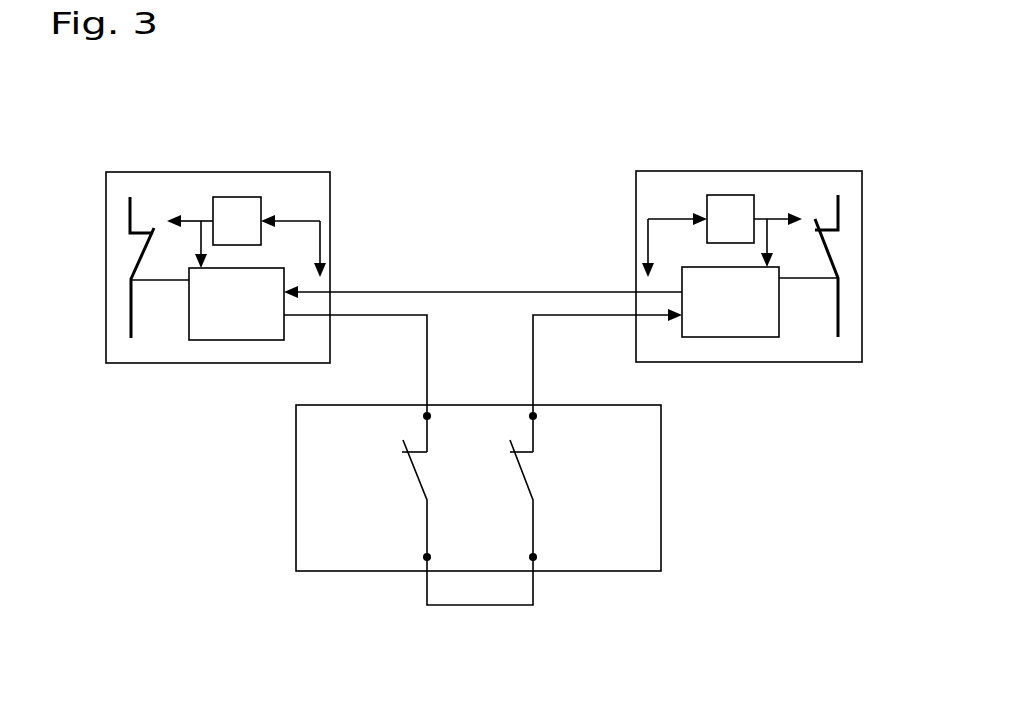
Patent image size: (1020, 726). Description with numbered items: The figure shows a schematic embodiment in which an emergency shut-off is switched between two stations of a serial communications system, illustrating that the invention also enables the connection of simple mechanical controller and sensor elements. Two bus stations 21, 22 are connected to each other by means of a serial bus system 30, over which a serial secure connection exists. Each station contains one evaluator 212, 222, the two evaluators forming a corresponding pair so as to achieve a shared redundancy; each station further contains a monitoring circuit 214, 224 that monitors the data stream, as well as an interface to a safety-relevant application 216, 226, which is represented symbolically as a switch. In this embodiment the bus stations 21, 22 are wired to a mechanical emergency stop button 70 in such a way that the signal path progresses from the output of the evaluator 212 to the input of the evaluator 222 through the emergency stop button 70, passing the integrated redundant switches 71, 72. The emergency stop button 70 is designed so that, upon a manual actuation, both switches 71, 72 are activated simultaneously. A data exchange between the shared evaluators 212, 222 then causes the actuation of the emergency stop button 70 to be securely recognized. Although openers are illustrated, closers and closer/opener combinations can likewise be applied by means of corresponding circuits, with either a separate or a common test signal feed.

The station 21 is at (142, 364).
The evaluator 212 is at (225, 340).
The monitoring circuit 214 is at (236, 197).
The interface to a safety-relevant application 216 is at (131, 272).
The station 22 is at (815, 363).
The evaluator 222 is at (729, 338).
The monitoring circuit 224 is at (718, 196).
The interface to a safety-relevant application 226 is at (830, 258).
The bus system 30 is at (437, 291).
The emergency stop button 70 is at (661, 475).
The redundant switch 71 is at (420, 487).
The redundant switch 72 is at (530, 487).